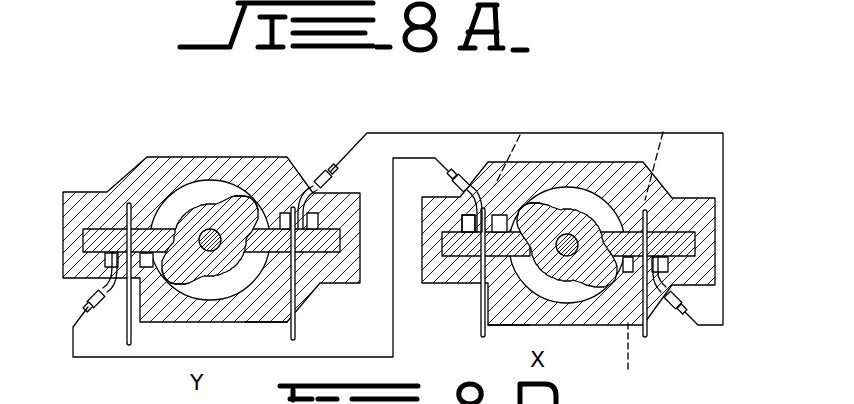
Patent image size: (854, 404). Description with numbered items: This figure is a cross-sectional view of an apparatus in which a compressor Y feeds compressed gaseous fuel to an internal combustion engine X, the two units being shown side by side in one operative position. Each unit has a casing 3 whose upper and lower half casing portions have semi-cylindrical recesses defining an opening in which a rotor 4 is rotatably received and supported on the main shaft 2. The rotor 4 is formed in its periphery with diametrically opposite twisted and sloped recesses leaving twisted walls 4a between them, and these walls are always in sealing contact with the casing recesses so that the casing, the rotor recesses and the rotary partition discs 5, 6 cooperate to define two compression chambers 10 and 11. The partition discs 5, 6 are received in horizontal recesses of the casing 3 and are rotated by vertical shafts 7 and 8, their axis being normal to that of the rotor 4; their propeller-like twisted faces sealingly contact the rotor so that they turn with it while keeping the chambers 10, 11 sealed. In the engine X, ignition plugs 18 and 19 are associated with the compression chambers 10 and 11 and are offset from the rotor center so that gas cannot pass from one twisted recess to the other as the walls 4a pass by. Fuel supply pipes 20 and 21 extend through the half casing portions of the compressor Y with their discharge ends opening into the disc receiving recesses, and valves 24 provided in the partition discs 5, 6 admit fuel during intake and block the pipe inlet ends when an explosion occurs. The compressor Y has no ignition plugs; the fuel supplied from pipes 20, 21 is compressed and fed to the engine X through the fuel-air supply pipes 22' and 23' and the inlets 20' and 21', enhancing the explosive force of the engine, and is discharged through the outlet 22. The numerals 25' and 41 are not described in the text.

The main shaft 2 is at (212, 252).
The casing 3 is at (125, 178).
The rotor 4 is at (212, 204).
The twisted walls 4a is at (254, 202).
The rotary partition disc 5 is at (152, 188).
The rotary partition disc 6 is at (332, 230).
The vertical shaft 7 is at (297, 313).
The vertical shaft 8 is at (646, 337).
The compression chamber 10 is at (195, 181).
The compression chamber 11 is at (260, 323).
The ignition plug 18 is at (513, 170).
The ignition plug 19 is at (627, 362).
The fuel supply pipe 20 is at (503, 211).
The inlet 20' is at (434, 178).
The fuel supply pipe 21 is at (115, 339).
The inlet 21' is at (723, 301).
The exhaust pipe 22 is at (663, 154).
The fuel-air supply pipe 22' is at (497, 136).
The fuel-air supply pipe 23' is at (457, 271).
The valve 24 is at (298, 192).
The connecting conduit 25' is at (263, 260).
The rotor lobe 41 is at (200, 275).